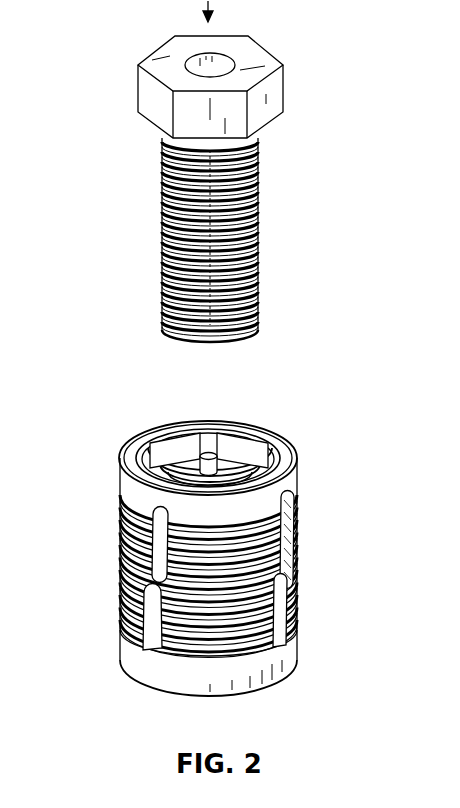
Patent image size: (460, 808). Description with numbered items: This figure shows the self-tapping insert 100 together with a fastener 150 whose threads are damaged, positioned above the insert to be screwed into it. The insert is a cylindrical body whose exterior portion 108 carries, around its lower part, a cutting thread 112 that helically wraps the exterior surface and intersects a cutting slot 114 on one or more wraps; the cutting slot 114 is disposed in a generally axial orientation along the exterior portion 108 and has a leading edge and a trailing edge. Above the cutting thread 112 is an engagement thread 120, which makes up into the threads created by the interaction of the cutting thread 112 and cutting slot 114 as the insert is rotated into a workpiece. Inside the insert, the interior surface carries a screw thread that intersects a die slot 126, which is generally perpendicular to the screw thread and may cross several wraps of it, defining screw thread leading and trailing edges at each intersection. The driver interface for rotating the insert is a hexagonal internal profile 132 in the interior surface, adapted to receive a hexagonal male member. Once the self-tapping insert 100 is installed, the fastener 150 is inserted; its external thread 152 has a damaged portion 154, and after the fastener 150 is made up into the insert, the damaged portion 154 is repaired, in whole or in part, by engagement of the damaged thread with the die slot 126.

The self-tapping insert 100 is at (287, 412).
The exterior portion 108 is at (304, 532).
The cutting thread 112 is at (285, 585).
The cutting slot 114 is at (282, 613).
The engagement thread 120 is at (120, 508).
The die slot 126 is at (209, 455).
The hexagonal internal profile 132 is at (170, 450).
The fastener 150 is at (140, 35).
The external thread 152 is at (257, 310).
The damaged portion 154 is at (208, 232).